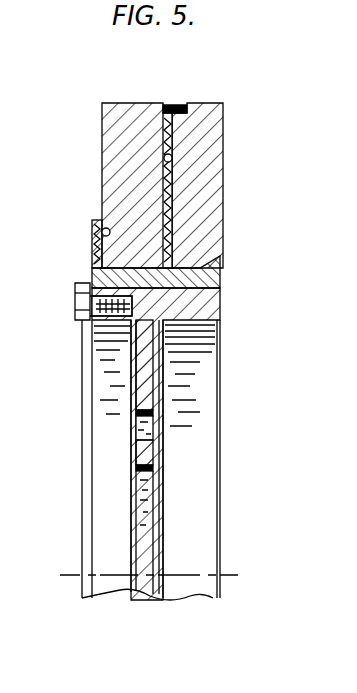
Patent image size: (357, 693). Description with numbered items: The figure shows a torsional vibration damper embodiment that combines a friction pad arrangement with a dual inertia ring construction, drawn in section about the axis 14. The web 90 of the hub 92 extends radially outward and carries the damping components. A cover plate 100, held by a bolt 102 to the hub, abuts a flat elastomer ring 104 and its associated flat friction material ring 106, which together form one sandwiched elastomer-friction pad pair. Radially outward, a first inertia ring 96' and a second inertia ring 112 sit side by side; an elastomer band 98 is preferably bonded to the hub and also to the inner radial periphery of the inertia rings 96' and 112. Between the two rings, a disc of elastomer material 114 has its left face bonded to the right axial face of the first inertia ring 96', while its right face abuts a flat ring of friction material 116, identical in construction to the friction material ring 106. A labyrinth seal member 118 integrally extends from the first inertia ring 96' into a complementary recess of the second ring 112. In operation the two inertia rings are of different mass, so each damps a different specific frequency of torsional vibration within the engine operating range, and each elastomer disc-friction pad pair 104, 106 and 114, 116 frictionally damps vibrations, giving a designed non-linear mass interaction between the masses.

The centerline axis 14 is at (68, 575).
The web 90 is at (138, 386).
The hub 92 is at (128, 330).
The first inertia ring 96' is at (137, 185).
The elastomer band 98 is at (217, 270).
The cover plate 100 is at (92, 438).
The bolt 102 is at (75, 297).
The flat elastomer ring 104 is at (92, 250).
The friction material ring 106 is at (92, 224).
The second inertia ring 112 is at (209, 171).
The disc of elastomer material 114 is at (165, 130).
The flat ring of friction material 116 is at (164, 158).
The labyrinth seal member 118 is at (177, 105).